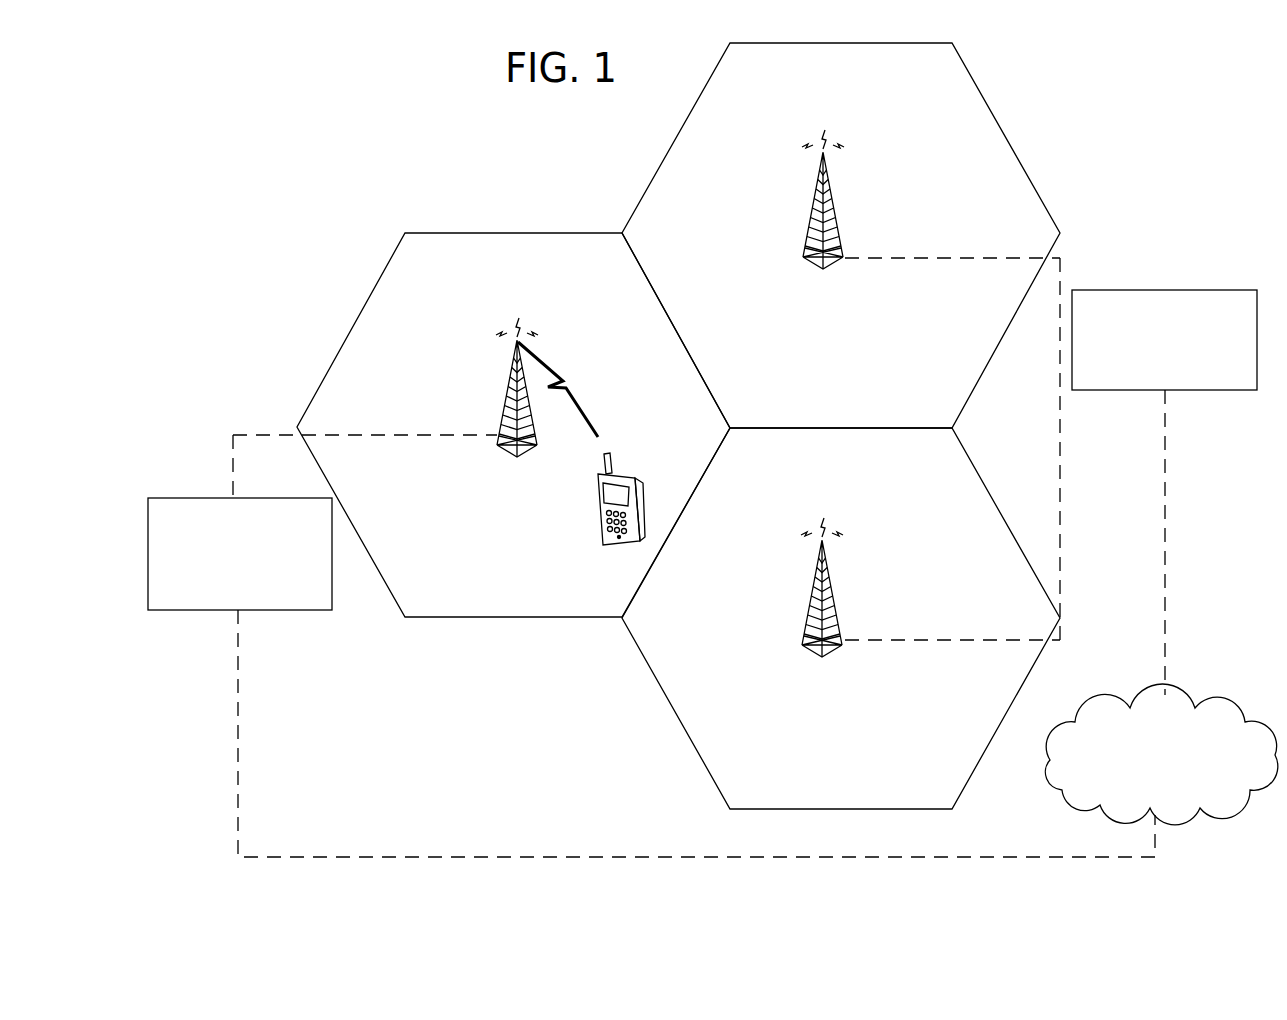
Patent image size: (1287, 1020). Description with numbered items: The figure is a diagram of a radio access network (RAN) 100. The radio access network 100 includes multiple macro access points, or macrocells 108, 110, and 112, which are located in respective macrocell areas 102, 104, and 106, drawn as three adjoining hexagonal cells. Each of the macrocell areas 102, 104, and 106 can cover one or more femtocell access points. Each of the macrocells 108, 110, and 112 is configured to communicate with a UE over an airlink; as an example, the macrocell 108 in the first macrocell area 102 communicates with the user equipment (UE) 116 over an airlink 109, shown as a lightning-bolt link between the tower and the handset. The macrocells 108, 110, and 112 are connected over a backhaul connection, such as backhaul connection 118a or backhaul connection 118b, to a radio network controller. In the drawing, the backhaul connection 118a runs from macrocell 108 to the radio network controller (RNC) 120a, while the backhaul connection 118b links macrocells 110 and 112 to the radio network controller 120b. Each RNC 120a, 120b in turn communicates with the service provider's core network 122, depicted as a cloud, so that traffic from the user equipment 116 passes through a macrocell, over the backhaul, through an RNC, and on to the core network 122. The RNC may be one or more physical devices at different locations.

The radio access network 100 is at (446, 121).
The macrocell area 102 is at (349, 306).
The macrocell area 104 is at (989, 104).
The macrocell area 106 is at (651, 717).
The macrocell 108 is at (503, 447).
The airlink 109 is at (563, 383).
The macrocell 110 is at (823, 263).
The macrocell 112 is at (824, 650).
The user equipment 116 is at (596, 546).
The backhaul connection 118a is at (231, 456).
The backhaul connection 118b is at (1061, 548).
The radio network controller 120a is at (240, 554).
The radio network controller 120b is at (1164, 340).
The service provider's core network 122 is at (1158, 692).